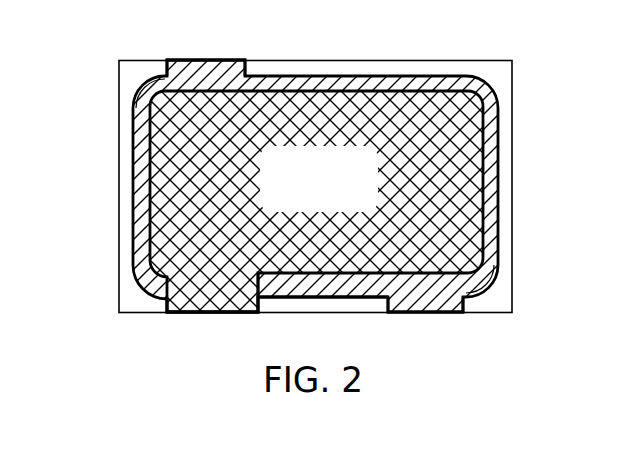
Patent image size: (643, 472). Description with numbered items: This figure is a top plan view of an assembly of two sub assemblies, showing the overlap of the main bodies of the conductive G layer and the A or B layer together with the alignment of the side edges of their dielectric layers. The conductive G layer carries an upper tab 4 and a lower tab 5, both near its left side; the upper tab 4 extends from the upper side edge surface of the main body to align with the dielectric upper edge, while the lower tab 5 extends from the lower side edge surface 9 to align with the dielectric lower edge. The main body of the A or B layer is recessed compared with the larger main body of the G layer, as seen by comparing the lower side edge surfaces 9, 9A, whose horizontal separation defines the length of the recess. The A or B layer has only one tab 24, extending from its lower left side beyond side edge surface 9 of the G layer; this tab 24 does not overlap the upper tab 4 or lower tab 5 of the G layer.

The upper tab 4 is at (205, 63).
The tab 24 is at (198, 303).
The conductive layer lower side edge surface 9 is at (268, 300).
The lower side edge surface 9A is at (335, 277).
The lower tab 5 is at (433, 302).
The G layer G is at (133, 173).
The A or B layer A or B is at (388, 182).